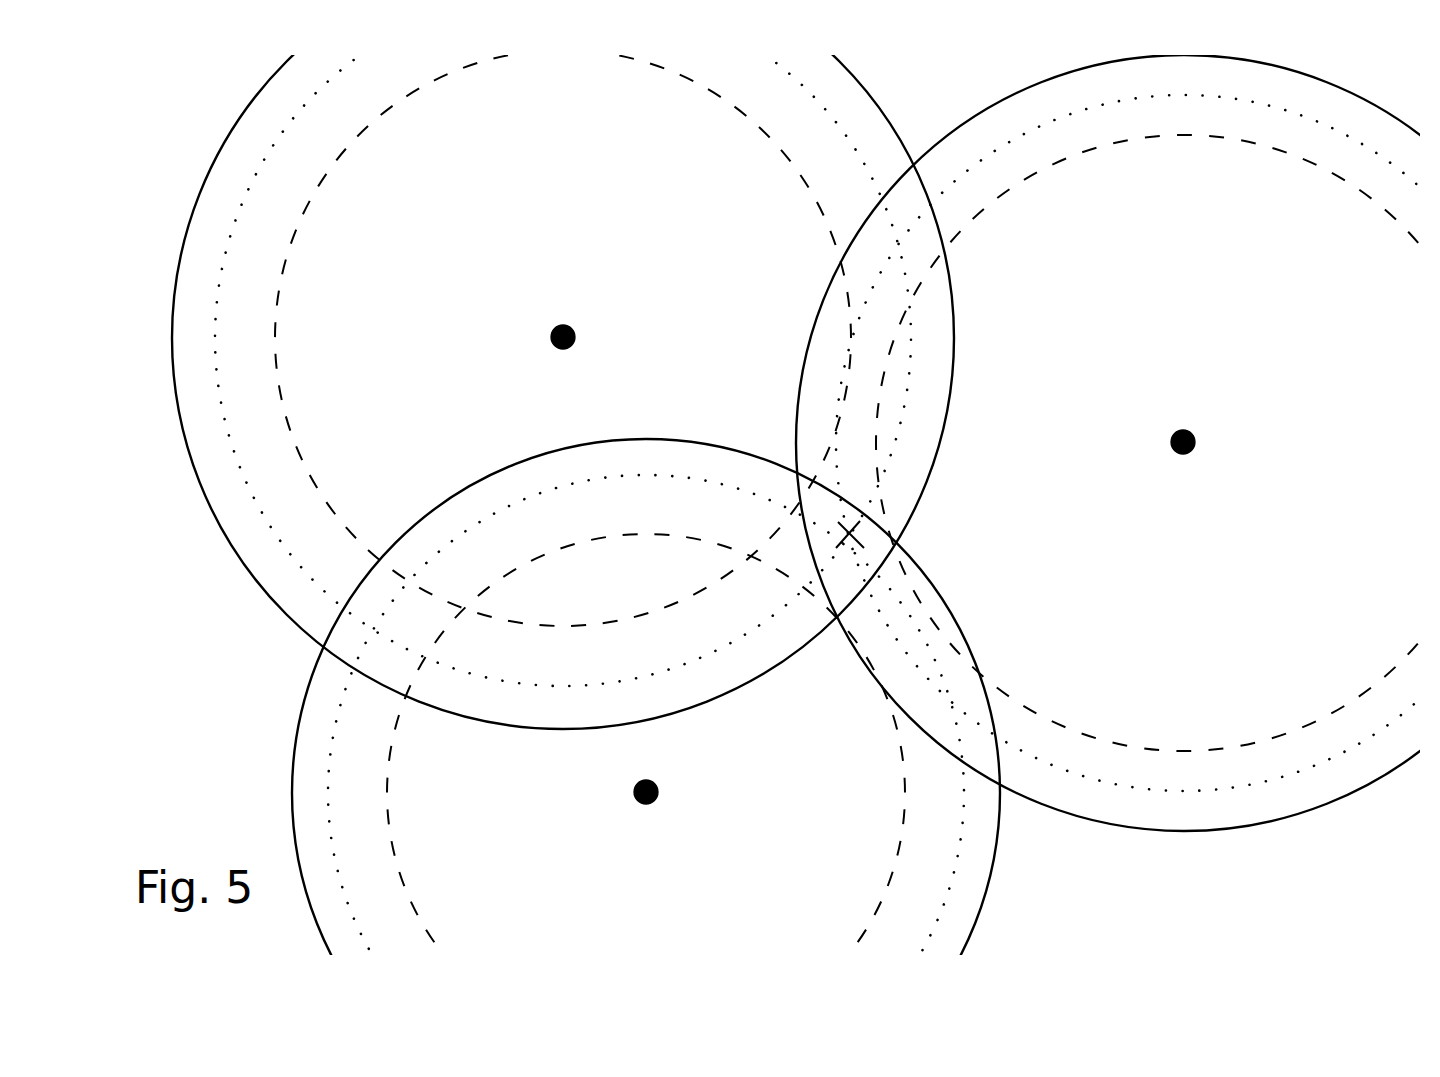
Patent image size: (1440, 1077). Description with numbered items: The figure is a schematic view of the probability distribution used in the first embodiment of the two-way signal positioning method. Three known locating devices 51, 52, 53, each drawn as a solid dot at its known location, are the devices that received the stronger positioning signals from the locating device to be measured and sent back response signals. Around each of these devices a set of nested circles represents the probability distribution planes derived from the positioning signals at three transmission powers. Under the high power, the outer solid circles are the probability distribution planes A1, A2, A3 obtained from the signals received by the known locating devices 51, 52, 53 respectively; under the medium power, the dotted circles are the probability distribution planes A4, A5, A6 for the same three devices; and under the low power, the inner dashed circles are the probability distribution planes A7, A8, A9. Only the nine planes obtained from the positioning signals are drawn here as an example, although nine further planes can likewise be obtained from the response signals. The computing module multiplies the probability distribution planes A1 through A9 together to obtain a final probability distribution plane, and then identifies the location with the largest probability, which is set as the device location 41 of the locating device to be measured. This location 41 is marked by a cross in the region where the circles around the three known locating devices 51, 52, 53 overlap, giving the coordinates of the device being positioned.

The device location 41 is at (866, 526).
The known locating device 51 is at (563, 325).
The known locating device 52 is at (1183, 430).
The known locating device 53 is at (646, 804).
The probability distribution plane A1 is at (203, 191).
The probability distribution plane A2 is at (975, 116).
The probability distribution plane A3 is at (300, 712).
The probability distribution plane A4 is at (250, 480).
The probability distribution plane A5 is at (1101, 105).
The probability distribution plane A6 is at (330, 772).
The probability distribution plane A7 is at (281, 311).
The probability distribution plane A8 is at (1155, 752).
The probability distribution plane A9 is at (900, 761).